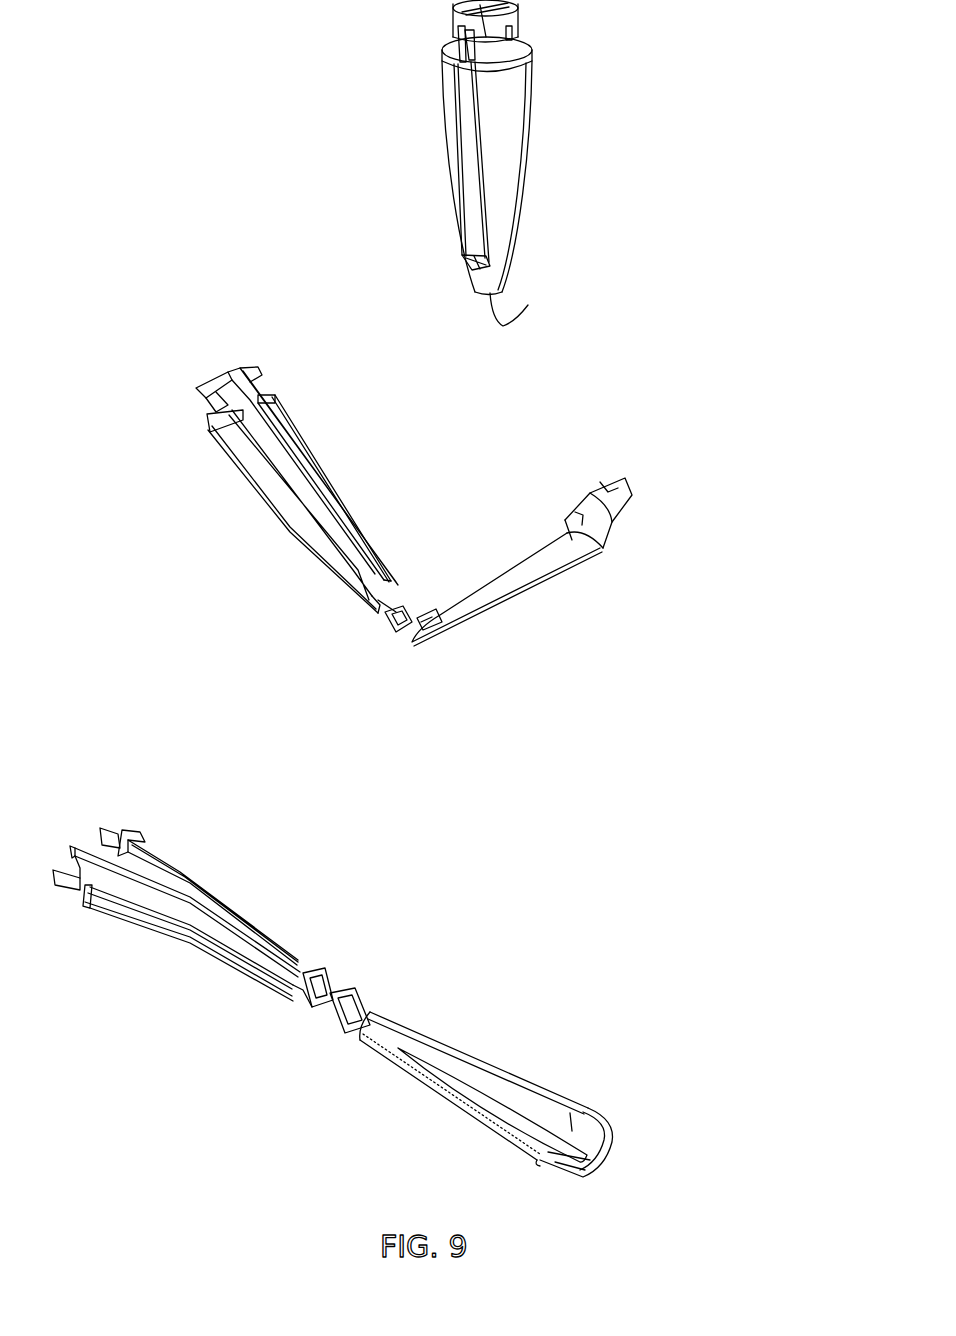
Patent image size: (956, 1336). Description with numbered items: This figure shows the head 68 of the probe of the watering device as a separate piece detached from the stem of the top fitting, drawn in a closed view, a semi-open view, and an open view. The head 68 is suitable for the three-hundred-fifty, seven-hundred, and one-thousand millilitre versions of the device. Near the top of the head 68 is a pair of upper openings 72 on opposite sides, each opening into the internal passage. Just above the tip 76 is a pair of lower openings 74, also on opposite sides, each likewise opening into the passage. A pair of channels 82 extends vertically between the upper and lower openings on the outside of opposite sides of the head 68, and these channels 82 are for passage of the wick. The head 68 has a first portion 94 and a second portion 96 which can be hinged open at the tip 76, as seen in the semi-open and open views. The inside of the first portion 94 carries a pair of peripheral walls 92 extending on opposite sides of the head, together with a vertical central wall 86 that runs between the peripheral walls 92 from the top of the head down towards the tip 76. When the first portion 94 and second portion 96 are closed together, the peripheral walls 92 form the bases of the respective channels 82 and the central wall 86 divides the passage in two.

The head 68 is at (527, 110).
The upper openings 72 is at (467, 60).
The lower openings 74 is at (467, 263).
The tip 76 is at (517, 302).
The channels 82 is at (470, 150).
The central wall 86 is at (297, 467).
The peripheral walls 92 is at (295, 423).
The first portion 94 is at (285, 527).
The second portion 96 is at (553, 580).